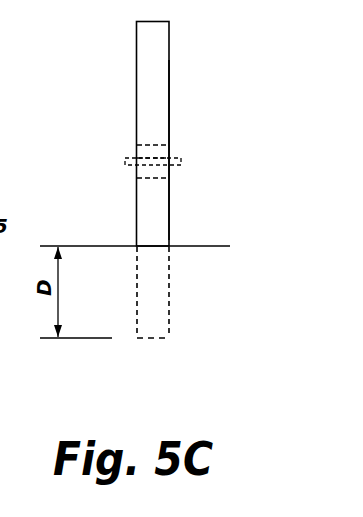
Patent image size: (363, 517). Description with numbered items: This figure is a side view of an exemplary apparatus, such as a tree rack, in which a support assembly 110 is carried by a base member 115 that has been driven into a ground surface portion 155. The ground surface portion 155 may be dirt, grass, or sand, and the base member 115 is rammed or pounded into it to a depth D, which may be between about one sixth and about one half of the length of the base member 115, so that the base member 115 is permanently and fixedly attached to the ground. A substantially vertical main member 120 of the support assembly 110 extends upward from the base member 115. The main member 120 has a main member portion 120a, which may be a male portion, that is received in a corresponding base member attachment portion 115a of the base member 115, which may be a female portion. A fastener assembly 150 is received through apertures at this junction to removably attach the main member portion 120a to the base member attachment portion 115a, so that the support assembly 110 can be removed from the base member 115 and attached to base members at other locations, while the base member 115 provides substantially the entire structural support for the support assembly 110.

The support assembly 110 is at (152, 180).
The main member 120 is at (150, 103).
The main member portion 120a is at (180, 127).
The base member 115 is at (158, 193).
The base member attachment portion 115a is at (143, 152).
The fastener assembly 150 is at (196, 155).
The ground surface portion 155 is at (209, 246).